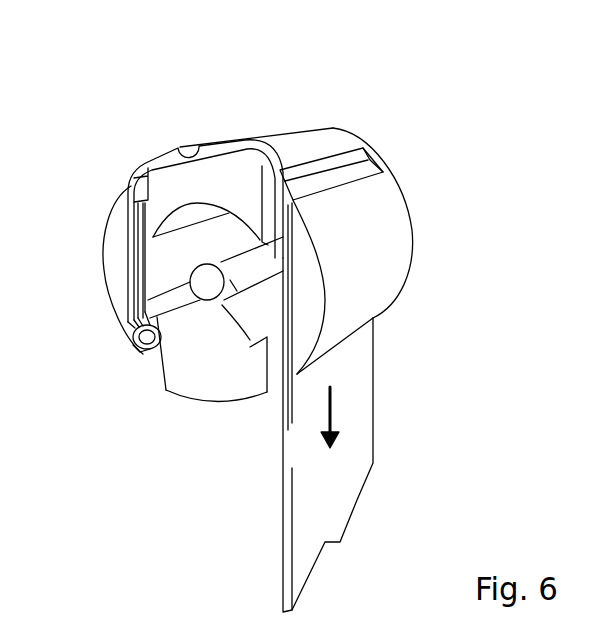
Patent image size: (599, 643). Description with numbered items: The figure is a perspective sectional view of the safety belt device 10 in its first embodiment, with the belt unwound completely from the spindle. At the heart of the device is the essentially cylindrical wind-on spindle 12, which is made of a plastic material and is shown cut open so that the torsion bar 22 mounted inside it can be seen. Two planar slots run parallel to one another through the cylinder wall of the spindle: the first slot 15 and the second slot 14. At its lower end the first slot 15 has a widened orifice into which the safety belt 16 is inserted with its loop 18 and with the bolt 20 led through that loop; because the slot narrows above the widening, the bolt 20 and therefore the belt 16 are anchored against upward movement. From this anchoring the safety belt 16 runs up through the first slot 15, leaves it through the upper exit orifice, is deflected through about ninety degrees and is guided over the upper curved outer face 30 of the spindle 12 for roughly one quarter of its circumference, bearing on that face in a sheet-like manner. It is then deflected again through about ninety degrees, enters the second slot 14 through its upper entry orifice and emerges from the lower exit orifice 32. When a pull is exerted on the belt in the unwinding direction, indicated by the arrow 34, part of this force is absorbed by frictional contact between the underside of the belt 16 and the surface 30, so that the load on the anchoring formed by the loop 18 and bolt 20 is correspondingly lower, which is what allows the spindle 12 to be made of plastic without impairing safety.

The safety belt device 10 is at (400, 100).
The wind-on spindle 12 is at (400, 232).
The second slot 14 is at (383, 181).
The first slot 15 is at (122, 286).
The safety belt 16 is at (287, 140).
The loop 18 is at (143, 350).
The bolt 20 is at (140, 353).
The torsion bar 22 is at (232, 284).
The upper curved outer face 30 is at (179, 148).
The lower exit orifice 32 is at (281, 392).
The arrow 34 is at (332, 412).